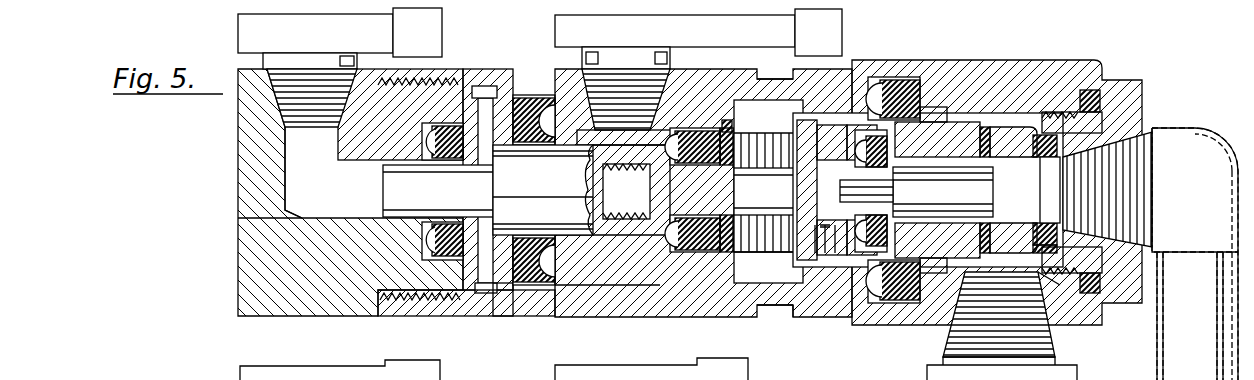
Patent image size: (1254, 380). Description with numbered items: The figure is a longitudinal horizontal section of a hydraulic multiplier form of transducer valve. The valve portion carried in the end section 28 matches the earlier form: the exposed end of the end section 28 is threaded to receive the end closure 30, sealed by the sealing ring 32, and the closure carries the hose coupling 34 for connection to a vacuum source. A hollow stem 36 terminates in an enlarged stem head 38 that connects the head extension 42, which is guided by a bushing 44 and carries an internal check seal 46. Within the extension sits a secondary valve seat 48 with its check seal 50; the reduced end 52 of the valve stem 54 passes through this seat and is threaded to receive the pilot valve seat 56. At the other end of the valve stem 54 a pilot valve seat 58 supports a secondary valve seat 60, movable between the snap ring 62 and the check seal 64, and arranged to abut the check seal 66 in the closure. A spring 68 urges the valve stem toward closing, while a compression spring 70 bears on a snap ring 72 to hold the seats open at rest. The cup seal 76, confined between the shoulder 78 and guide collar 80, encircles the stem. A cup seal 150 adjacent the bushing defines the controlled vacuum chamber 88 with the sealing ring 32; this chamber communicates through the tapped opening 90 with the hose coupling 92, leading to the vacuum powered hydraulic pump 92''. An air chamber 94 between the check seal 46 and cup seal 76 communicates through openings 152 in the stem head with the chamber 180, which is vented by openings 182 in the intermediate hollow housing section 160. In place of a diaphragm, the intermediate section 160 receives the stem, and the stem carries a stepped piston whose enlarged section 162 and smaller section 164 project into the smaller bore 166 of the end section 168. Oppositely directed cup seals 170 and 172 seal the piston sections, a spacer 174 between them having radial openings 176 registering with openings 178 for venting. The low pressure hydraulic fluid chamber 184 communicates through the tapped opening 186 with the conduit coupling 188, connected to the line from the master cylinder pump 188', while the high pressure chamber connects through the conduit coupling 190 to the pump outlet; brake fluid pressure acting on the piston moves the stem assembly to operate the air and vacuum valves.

The end section 28 is at (1088, 65).
The end closure 30 is at (1140, 112).
The sealing ring 32 is at (1105, 100).
The hose coupling 34 is at (1185, 138).
The stem 36 is at (585, 180).
The stem head 38 is at (812, 300).
The head extension 42 is at (960, 122).
The bushing 44 is at (935, 107).
The check seal 46 is at (905, 222).
The secondary valve seat 48 is at (857, 265).
The check seal 50 is at (880, 200).
The reduced end 52 is at (943, 175).
The valve stem 54 is at (972, 185).
The pilot valve seat 56 is at (836, 167).
The pilot valve seat 58 is at (1047, 190).
The secondary valve seat 60 is at (1035, 127).
The snap ring 62 is at (985, 127).
The check seal 64 is at (1045, 190).
The check seal 66 is at (1050, 225).
The spring 68 is at (851, 234).
The compression spring 70 is at (764, 264).
The snap ring 72 is at (727, 120).
The cup seal 76 is at (700, 128).
The shoulder 78 is at (680, 255).
The guide collar 80 is at (727, 128).
The controlled vacuum chamber 88 is at (1075, 300).
The tapped opening 90 is at (1030, 280).
The hose coupling 92 is at (993, 326).
The hydraulic pump 92'' is at (417, 32).
The air chamber 94 is at (852, 140).
The cup seal 150 is at (893, 257).
The openings 152 is at (768, 191).
The intermediate hollow housing section 160 is at (724, 290).
The enlarged section 162 is at (600, 240).
The smaller section 164 is at (414, 191).
The smaller bore 166 is at (300, 172).
The end section 168 is at (250, 250).
The cup seal 170 is at (448, 160).
The cup seal 172 is at (522, 95).
The spacer 174 is at (503, 285).
The radial openings 176 is at (475, 292).
The openings 178 is at (476, 70).
The chamber 180 is at (770, 100).
The openings 182 is at (778, 308).
The low pressure hydraulic fluid chamber 184 is at (580, 265).
The tapped opening 186 is at (600, 128).
The conduit coupling 188 is at (649, 65).
The master cylinder pump 188' is at (818, 32).
The conduit coupling 190 is at (290, 62).